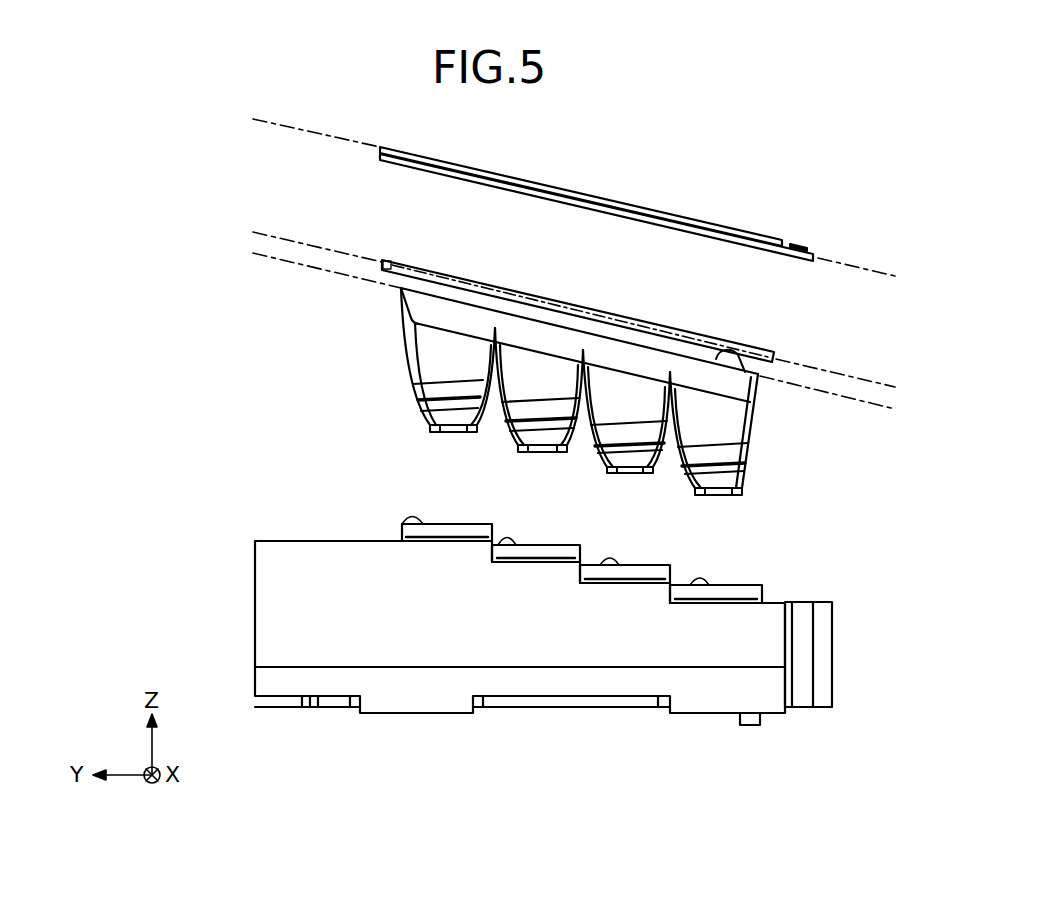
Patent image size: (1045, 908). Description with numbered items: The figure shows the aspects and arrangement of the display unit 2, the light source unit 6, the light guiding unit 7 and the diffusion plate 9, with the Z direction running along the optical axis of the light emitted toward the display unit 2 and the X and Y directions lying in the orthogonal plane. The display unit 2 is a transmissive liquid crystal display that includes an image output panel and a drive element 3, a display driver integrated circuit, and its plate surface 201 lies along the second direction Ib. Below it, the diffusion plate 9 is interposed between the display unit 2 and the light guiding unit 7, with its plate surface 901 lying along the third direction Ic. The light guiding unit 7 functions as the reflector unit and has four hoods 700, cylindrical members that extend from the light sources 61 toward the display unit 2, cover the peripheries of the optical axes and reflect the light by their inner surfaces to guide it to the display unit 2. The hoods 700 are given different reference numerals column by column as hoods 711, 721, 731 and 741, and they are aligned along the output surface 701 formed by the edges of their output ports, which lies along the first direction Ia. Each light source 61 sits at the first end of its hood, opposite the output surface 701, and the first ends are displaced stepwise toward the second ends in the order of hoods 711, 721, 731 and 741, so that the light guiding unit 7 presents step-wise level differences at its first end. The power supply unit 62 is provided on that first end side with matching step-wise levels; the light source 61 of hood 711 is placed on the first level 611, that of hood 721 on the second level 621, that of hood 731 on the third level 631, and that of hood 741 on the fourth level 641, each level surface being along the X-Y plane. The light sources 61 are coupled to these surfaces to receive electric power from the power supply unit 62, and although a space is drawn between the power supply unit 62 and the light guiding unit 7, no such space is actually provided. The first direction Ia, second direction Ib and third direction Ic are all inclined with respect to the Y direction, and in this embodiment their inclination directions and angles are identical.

The display unit 2 is at (730, 229).
The plate surface 201 is at (562, 188).
The drive element 3 is at (800, 244).
The diffusion plate 9 is at (741, 344).
The plate surface 901 is at (511, 290).
The light guiding unit 7 is at (581, 423).
The hoods 700 is at (581, 423).
The output surface 701 is at (759, 383).
The hood 711 is at (722, 424).
The hood 721 is at (642, 405).
The hood 731 is at (546, 388).
The hood 741 is at (447, 354).
The light source 61 is at (446, 440).
The light source unit 6 is at (482, 633).
The power supply unit 62 is at (255, 606).
The first level 611 is at (707, 578).
The second level 621 is at (620, 558).
The third level 631 is at (513, 542).
The fourth level 641 is at (403, 518).
The first direction Ia is at (562, 325).
The second direction Ib is at (560, 192).
The third direction Ic is at (562, 299).